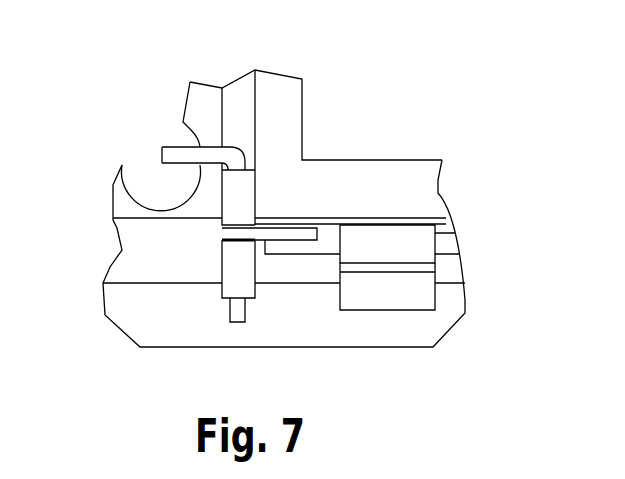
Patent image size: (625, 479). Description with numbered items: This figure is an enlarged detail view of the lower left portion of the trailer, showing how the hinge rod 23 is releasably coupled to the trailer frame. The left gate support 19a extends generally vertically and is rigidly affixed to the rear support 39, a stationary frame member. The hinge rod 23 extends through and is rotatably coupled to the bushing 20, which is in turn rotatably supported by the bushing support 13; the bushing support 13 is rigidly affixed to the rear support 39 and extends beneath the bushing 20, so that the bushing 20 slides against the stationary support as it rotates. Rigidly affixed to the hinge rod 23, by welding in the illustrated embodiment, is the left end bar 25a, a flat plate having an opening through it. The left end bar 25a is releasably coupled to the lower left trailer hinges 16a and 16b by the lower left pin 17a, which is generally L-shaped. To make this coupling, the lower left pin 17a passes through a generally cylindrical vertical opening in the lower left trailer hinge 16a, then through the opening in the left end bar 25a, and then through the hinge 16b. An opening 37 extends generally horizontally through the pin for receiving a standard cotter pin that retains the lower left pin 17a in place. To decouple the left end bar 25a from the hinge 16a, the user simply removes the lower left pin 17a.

The bushing support 13 is at (401, 307).
The lower left trailer hinge 16a is at (228, 212).
The lower left trailer hinge 16b is at (228, 280).
The lower left pin 17a is at (180, 155).
The left gate support 19a is at (238, 103).
The bushing 20 is at (398, 257).
The hinge rod 23 is at (440, 240).
The left end bar 25a is at (270, 233).
The opening 37 is at (243, 303).
The rear support 39 is at (137, 267).